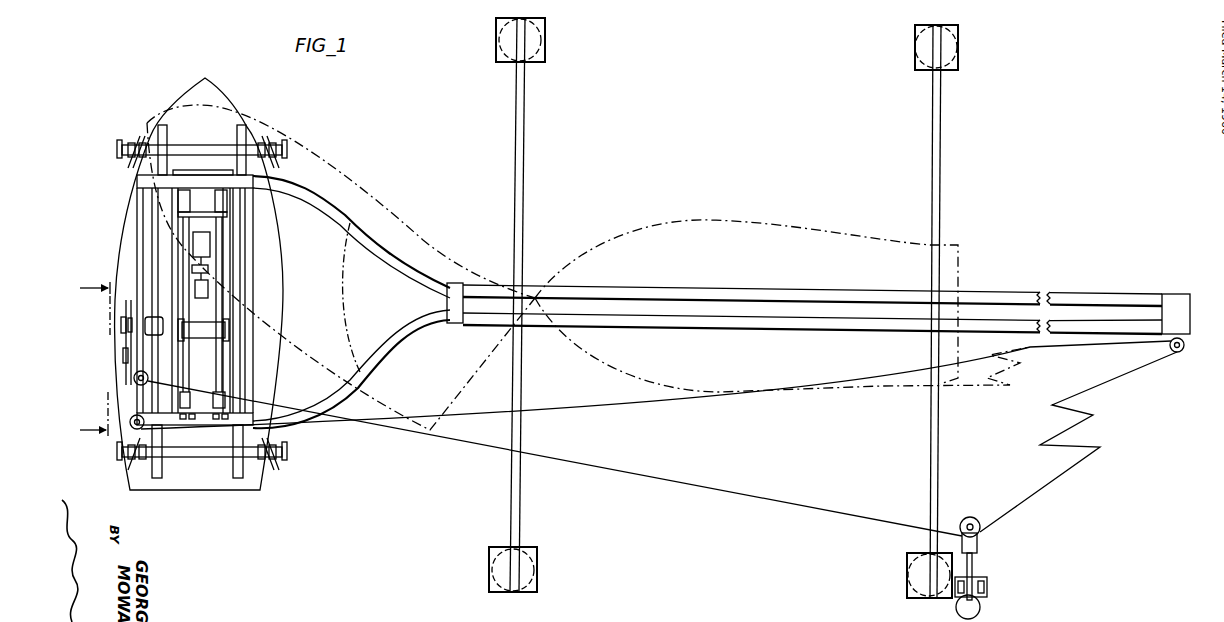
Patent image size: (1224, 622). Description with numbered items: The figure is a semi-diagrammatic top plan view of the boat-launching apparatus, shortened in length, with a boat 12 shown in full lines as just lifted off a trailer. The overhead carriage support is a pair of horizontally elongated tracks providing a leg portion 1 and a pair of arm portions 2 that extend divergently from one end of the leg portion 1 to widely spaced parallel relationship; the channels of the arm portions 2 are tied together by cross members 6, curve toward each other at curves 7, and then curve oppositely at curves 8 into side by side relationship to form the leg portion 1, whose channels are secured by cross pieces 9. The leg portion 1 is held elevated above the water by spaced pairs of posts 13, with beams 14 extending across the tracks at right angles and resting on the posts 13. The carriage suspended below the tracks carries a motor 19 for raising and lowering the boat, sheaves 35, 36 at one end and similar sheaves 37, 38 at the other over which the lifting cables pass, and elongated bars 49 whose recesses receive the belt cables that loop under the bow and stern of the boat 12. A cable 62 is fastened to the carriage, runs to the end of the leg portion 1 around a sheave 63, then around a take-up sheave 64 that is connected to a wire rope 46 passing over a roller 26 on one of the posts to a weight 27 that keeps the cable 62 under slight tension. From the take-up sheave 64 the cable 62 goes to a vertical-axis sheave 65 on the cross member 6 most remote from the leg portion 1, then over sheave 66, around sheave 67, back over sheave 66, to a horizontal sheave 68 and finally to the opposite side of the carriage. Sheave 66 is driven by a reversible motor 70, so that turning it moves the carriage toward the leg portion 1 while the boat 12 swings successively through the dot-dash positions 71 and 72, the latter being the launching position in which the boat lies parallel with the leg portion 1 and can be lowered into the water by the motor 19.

The leg portion 1 is at (966, 283).
The arm portions 2 is at (325, 178).
The cross members 6 is at (140, 233).
The curves 7 is at (211, 331).
The curves 8 is at (440, 298).
The cross pieces 9 is at (455, 283).
The boat 12 is at (214, 84).
The posts 13 is at (538, 60).
The beams 14 is at (517, 195).
The motor 19 is at (206, 245).
The roller 26 is at (980, 582).
The weight 27 is at (981, 608).
The sheave 35 is at (178, 198).
The sheave 36 is at (224, 204).
The sheave 37 is at (216, 392).
The sheave 38 is at (190, 392).
The wire rope 46 is at (975, 570).
The elongated bars 49 is at (190, 458).
The cable 62 is at (330, 430).
The sheave 63 is at (1184, 349).
The take-up sheave 64 is at (968, 517).
The sheave 65 is at (135, 381).
The sheave 66 is at (122, 326).
The sheave 67 is at (125, 356).
The sheave 68 is at (132, 427).
The reversible motor 70 is at (150, 330).
The dot dash line position 71 is at (414, 232).
The dot dash line position 72 is at (770, 222).